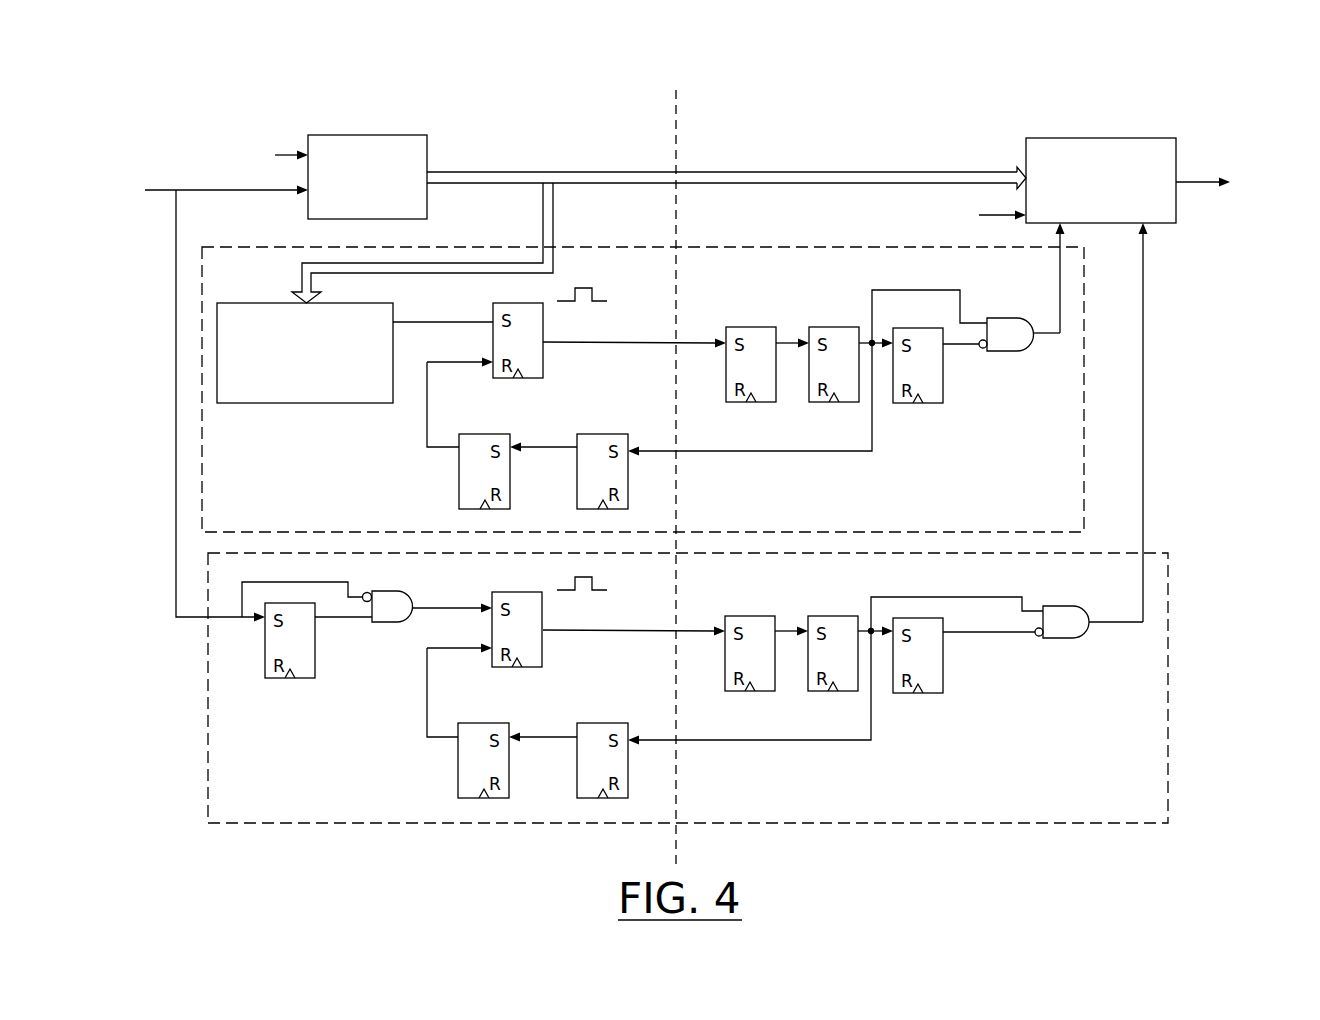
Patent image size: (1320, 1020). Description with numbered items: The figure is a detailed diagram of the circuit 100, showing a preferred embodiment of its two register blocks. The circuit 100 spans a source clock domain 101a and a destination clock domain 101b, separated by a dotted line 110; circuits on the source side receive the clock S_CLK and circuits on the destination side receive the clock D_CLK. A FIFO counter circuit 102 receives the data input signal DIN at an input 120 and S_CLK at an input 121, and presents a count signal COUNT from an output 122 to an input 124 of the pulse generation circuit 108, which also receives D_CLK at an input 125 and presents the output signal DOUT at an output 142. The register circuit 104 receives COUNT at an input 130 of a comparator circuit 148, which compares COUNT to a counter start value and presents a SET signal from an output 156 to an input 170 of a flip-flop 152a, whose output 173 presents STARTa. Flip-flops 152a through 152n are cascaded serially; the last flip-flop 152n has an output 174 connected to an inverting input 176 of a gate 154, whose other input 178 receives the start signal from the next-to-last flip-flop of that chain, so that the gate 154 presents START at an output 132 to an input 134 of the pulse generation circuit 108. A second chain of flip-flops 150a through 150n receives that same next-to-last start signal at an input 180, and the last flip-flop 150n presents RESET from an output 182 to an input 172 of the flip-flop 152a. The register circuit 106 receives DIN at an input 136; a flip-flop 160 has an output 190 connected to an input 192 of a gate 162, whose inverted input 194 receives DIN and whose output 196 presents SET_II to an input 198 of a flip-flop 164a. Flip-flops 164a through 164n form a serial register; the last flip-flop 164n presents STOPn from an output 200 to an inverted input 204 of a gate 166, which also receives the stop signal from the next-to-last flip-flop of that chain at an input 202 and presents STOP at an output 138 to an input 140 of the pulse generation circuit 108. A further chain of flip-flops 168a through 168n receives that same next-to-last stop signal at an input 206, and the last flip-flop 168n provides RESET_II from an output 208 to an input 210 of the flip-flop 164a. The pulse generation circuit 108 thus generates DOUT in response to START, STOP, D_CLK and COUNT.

The circuit 100 is at (278, 72).
The source time domain 101a is at (610, 83).
The destination domain 101b is at (733, 83).
The counter circuit 102 is at (345, 135).
The register circuit 104 is at (1064, 534).
The register circuit 106 is at (998, 556).
The pulse generation circuit 108 is at (1106, 138).
The dotted line 110 is at (676, 90).
The input 120 is at (306, 195).
The input 121 is at (306, 152).
The output 122 is at (428, 170).
The input 124 is at (1022, 167).
The input 125 is at (1022, 213).
The input 130 is at (554, 250).
The output 132 is at (1034, 338).
The input 134 is at (1064, 228).
The input 136 is at (205, 617).
The output 138 is at (1090, 624).
The input 140 is at (1148, 228).
The output 142 is at (1176, 185).
The circuit 148 is at (245, 403).
The flip-flop 150a is at (605, 434).
The flip-flop 150n is at (485, 434).
The flip-flop 152a is at (537, 380).
The flip-flop 152n is at (935, 403).
The gate 154 is at (1016, 318).
The output 156 is at (396, 323).
The flip-flop 160 is at (282, 678).
The gate 162 is at (410, 592).
The flip-flop 164a is at (530, 667).
The flip-flop 164n is at (930, 694).
The gate 166 is at (1084, 608).
The flip-flop 168a is at (610, 723).
The flip-flop 168n is at (484, 723).
The input 170 is at (492, 323).
The input 172 is at (490, 363).
The output 173 is at (545, 343).
The output 174 is at (943, 362).
The inverting input 176 is at (985, 349).
The input 178 is at (983, 322).
The input 180 is at (632, 455).
The output 182 is at (459, 452).
The output 190 is at (318, 618).
The input 192 is at (370, 622).
The inverted input 194 is at (366, 592).
The output 196 is at (417, 608).
The input 198 is at (491, 600).
The output 200 is at (945, 635).
The input 202 is at (1045, 607).
The inverted input 204 is at (1042, 638).
The input 206 is at (632, 742).
The output 208 is at (458, 740).
The input 210 is at (490, 649).